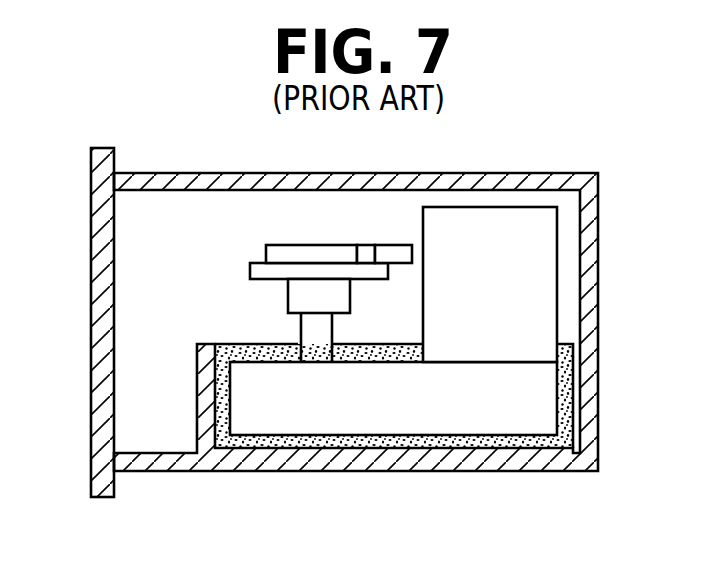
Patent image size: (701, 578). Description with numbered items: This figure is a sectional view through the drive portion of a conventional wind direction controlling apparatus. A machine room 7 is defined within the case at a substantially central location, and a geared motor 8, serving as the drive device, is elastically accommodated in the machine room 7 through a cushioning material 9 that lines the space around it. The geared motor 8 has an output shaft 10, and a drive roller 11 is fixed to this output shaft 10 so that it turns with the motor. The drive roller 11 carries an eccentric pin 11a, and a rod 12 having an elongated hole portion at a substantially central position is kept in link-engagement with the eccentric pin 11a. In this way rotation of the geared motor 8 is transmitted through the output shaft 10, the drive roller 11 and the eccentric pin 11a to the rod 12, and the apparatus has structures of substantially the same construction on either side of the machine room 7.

The machine room 7 is at (503, 174).
The geared motor 8 is at (434, 207).
The cushioning material 9 is at (238, 344).
The output shaft 10 is at (298, 333).
The drive roller 11 is at (250, 267).
The eccentric pin 11a is at (377, 249).
The rod 12 is at (290, 245).